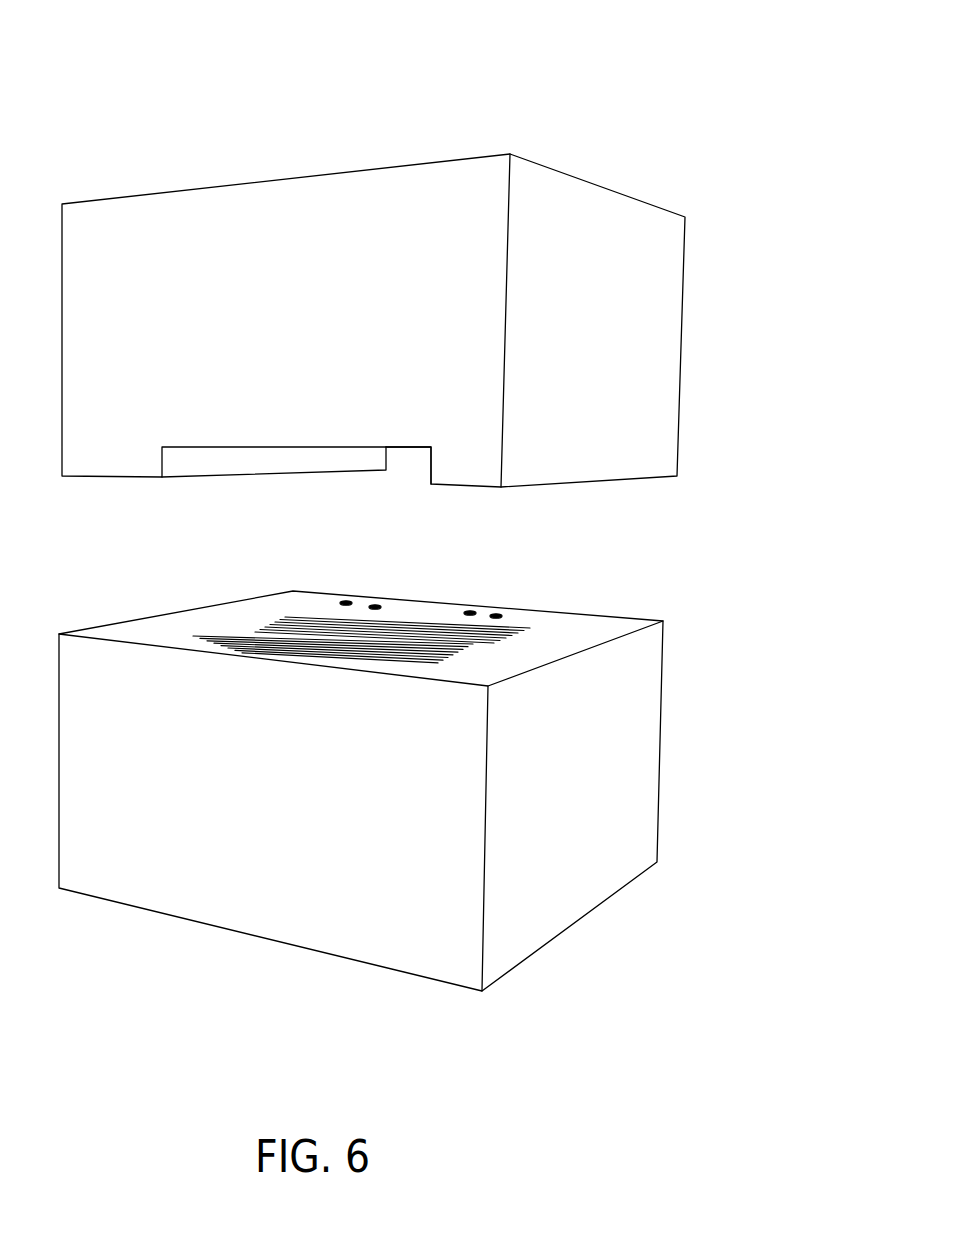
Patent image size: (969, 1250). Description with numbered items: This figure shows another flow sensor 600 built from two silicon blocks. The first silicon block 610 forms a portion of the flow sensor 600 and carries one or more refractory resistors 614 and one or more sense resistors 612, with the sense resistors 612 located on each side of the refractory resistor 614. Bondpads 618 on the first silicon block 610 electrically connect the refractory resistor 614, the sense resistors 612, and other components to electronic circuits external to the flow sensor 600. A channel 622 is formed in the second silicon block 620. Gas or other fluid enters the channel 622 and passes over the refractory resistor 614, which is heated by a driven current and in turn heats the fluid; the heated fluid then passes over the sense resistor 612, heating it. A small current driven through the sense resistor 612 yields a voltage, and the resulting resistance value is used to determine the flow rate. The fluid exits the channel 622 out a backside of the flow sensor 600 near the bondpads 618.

The flow sensor 600 is at (637, 73).
The first silicon block 610 is at (627, 718).
The sense resistor 612 is at (425, 617).
The refractory resistor 614 is at (335, 652).
The bondpads 618 is at (497, 613).
The second silicon block 620 is at (650, 347).
The channel 622 is at (410, 470).